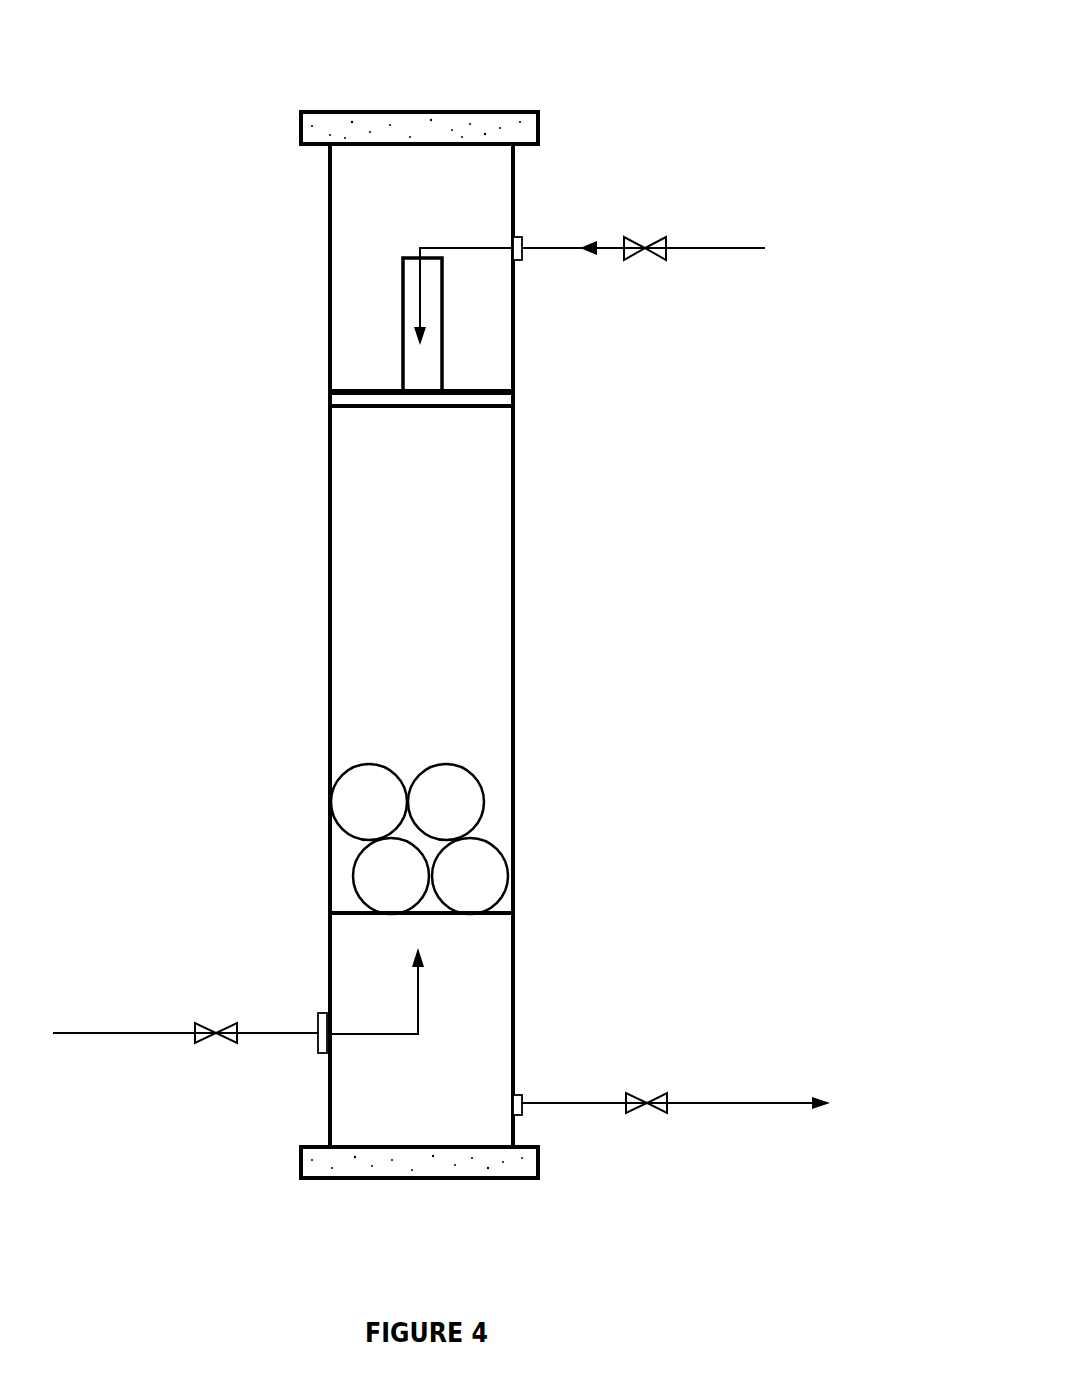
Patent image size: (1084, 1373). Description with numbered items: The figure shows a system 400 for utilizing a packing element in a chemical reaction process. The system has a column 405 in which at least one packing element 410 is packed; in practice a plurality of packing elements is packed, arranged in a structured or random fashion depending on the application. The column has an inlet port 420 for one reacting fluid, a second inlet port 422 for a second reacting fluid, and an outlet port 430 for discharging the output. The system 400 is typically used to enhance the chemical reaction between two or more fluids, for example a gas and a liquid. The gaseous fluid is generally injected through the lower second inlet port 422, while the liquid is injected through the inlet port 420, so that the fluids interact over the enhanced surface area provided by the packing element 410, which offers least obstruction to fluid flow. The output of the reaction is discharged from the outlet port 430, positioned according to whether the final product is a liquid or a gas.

The system 400 is at (603, 108).
The column 405 is at (513, 590).
The packing element 410 is at (482, 783).
The inlet port 420 is at (553, 247).
The second inlet port 422 is at (217, 1045).
The outlet port 430 is at (565, 1104).